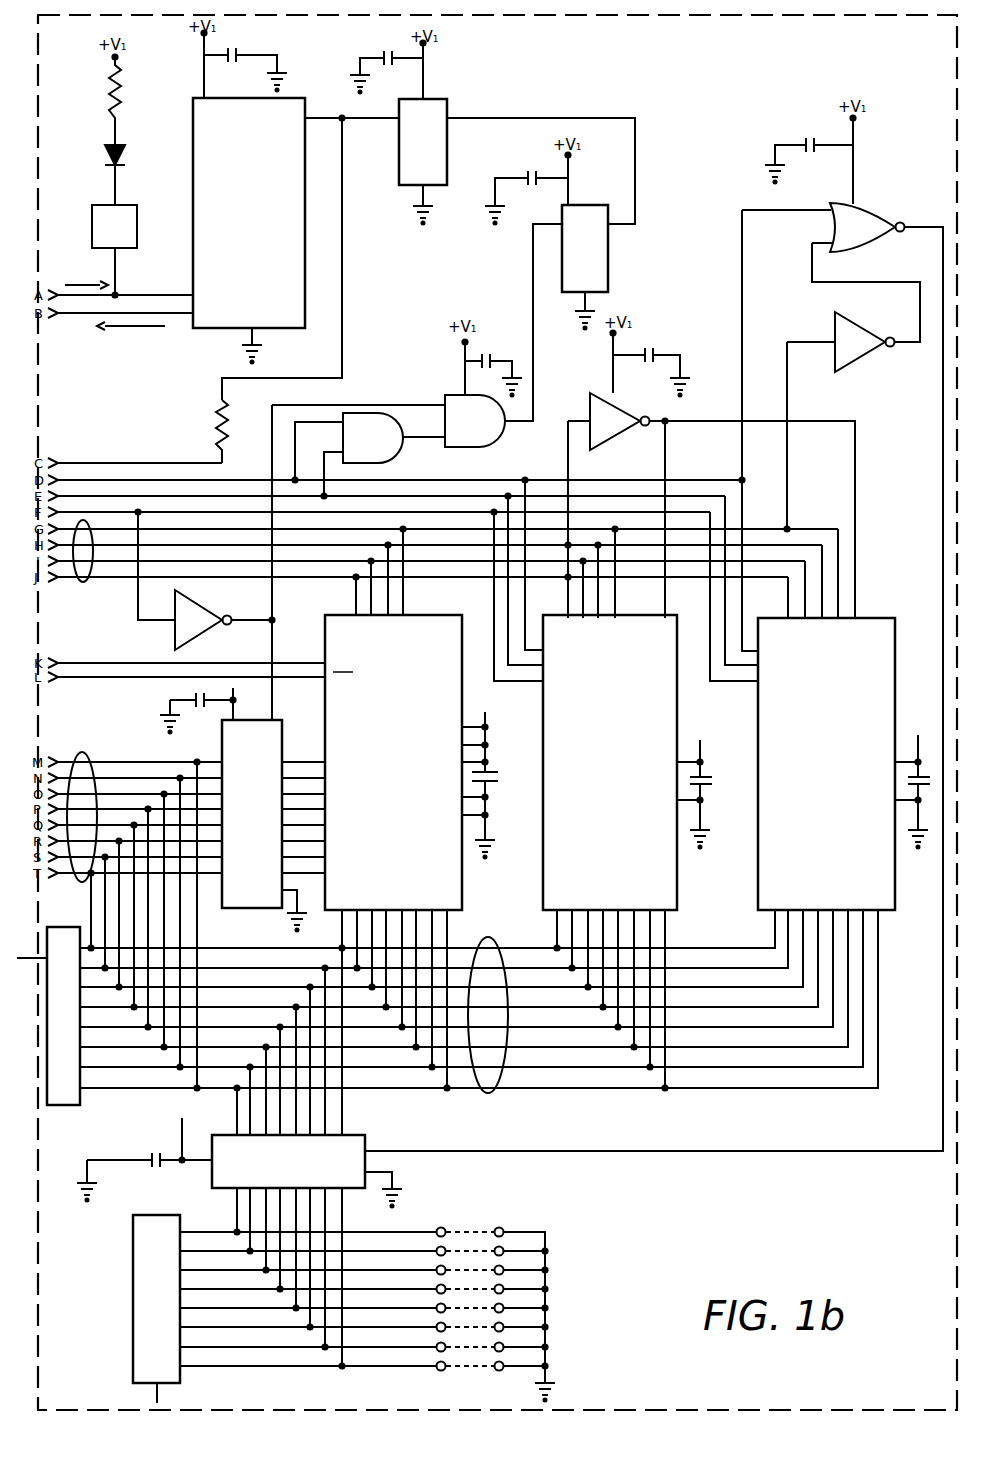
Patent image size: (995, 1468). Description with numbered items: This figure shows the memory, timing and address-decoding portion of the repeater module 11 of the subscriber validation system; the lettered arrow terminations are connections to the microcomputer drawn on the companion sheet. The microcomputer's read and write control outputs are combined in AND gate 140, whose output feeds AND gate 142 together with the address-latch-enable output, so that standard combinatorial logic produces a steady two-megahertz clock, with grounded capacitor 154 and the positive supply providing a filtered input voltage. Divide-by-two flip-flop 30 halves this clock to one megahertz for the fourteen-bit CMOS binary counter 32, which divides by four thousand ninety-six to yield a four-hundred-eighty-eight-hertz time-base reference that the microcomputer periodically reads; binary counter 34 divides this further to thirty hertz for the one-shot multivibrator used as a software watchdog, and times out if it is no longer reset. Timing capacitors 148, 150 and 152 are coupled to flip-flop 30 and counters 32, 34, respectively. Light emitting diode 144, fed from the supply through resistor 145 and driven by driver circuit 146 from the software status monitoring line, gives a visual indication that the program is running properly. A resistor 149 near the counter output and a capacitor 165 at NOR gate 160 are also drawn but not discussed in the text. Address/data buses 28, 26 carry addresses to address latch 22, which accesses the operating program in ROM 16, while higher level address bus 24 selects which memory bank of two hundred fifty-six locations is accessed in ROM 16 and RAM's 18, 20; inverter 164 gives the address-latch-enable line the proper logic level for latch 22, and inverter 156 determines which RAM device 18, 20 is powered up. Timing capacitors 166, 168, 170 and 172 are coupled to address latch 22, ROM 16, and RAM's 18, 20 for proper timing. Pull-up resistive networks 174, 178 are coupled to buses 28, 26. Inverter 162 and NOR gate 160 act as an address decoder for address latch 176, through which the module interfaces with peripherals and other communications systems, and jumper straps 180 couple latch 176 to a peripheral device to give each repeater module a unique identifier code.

The repeater module 11 is at (688, 245).
The resistor 145 is at (110, 90).
The light emitting diode 144 is at (125, 155).
The driver circuit 146 is at (137, 225).
The binary counter 34 is at (268, 303).
The timing capacitor 152 is at (235, 42).
The timing capacitor 150 is at (385, 45).
The 14-bit CMOS binary counter 32 is at (440, 151).
The timing capacitor 148 is at (532, 153).
The divide-by-two flip-flop 30 is at (602, 255).
The capacitor 165 is at (800, 132).
The NOR gate 160 is at (878, 237).
The inverter 162 is at (857, 327).
The grounded capacitor 154 is at (490, 340).
The AND gate 140 is at (392, 448).
The AND gate 142 is at (492, 430).
The inverter 156 is at (636, 440).
The resistor 149 is at (210, 420).
The higher level address bus 24 is at (83, 582).
The inverter 164 is at (208, 600).
The timing capacitor 166 is at (206, 720).
The address latch 22 is at (268, 883).
The ROM 16 is at (374, 900).
The timing capacitor 168 is at (510, 770).
The RAM 18 is at (590, 900).
The timing capacitor 170 is at (720, 778).
The RAM 20 is at (806, 900).
The timing capacitor 172 is at (928, 770).
The address/data bus 28 is at (98, 738).
The pull-up resistive network 174 is at (60, 1105).
The address/data bus 26 is at (488, 1093).
The address latch 176 is at (355, 1177).
The pull-up resistive network 178 is at (176, 1267).
The jumper wires 180 is at (471, 1218).